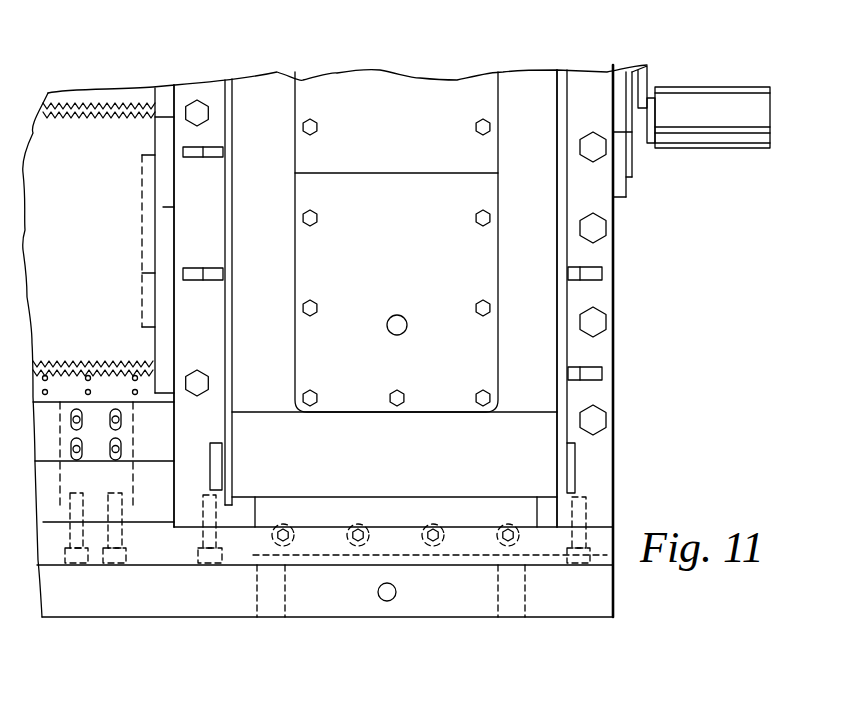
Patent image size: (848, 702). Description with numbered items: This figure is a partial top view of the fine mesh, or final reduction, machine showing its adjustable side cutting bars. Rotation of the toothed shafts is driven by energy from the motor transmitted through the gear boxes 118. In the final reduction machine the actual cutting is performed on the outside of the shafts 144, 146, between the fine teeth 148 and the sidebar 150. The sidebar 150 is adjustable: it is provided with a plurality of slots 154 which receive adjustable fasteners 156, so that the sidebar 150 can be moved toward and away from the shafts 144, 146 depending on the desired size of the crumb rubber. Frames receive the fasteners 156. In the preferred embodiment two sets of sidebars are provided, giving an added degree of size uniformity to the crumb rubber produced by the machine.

The gear box 118 is at (392, 98).
The shaft 144 is at (102, 216).
The shaft 146 is at (91, 97).
The fine teeth 148 is at (127, 105).
The sidebar 150 is at (50, 442).
The slot 154 is at (78, 455).
The adjustable fastener 156 is at (117, 447).